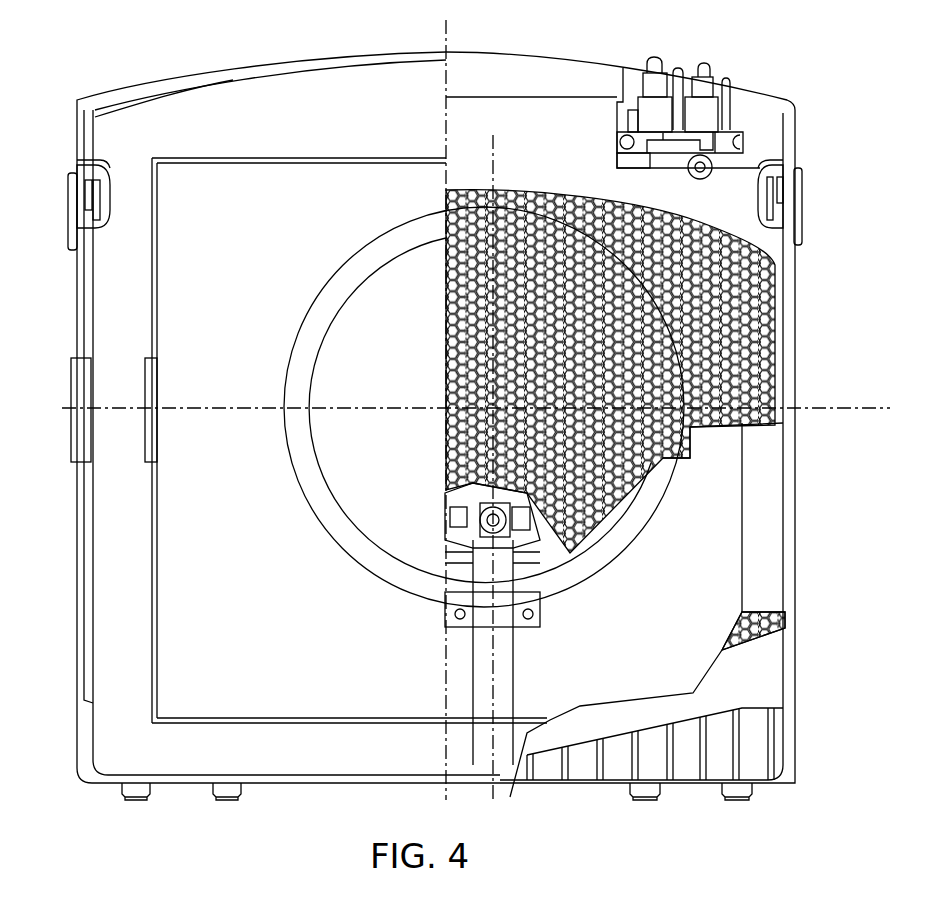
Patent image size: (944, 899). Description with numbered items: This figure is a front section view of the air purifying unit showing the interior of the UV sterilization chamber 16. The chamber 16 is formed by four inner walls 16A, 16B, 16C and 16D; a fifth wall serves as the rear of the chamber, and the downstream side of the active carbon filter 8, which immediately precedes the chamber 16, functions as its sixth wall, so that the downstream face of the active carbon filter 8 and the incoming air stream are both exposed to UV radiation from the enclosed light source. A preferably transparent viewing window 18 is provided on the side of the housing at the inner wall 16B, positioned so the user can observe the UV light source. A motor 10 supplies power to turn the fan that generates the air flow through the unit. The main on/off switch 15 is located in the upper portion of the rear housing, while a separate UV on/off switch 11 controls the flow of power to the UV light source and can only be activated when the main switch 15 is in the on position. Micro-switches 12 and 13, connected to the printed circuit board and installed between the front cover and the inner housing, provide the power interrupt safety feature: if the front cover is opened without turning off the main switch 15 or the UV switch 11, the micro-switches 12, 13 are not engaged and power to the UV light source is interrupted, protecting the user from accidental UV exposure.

The active carbon filter 8 is at (320, 507).
The motor 10 is at (158, 448).
The UV on/off switch 11 is at (697, 113).
The micro-switch 12 is at (790, 165).
The micro-switch 13 is at (80, 183).
The main on/off switch 15 is at (652, 80).
The UV sterilization chamber 16 is at (237, 183).
The wall 16A is at (372, 163).
The wall 16B is at (158, 262).
The wall 16C is at (420, 716).
The wall 16D is at (742, 553).
The viewing window 18 is at (71, 368).